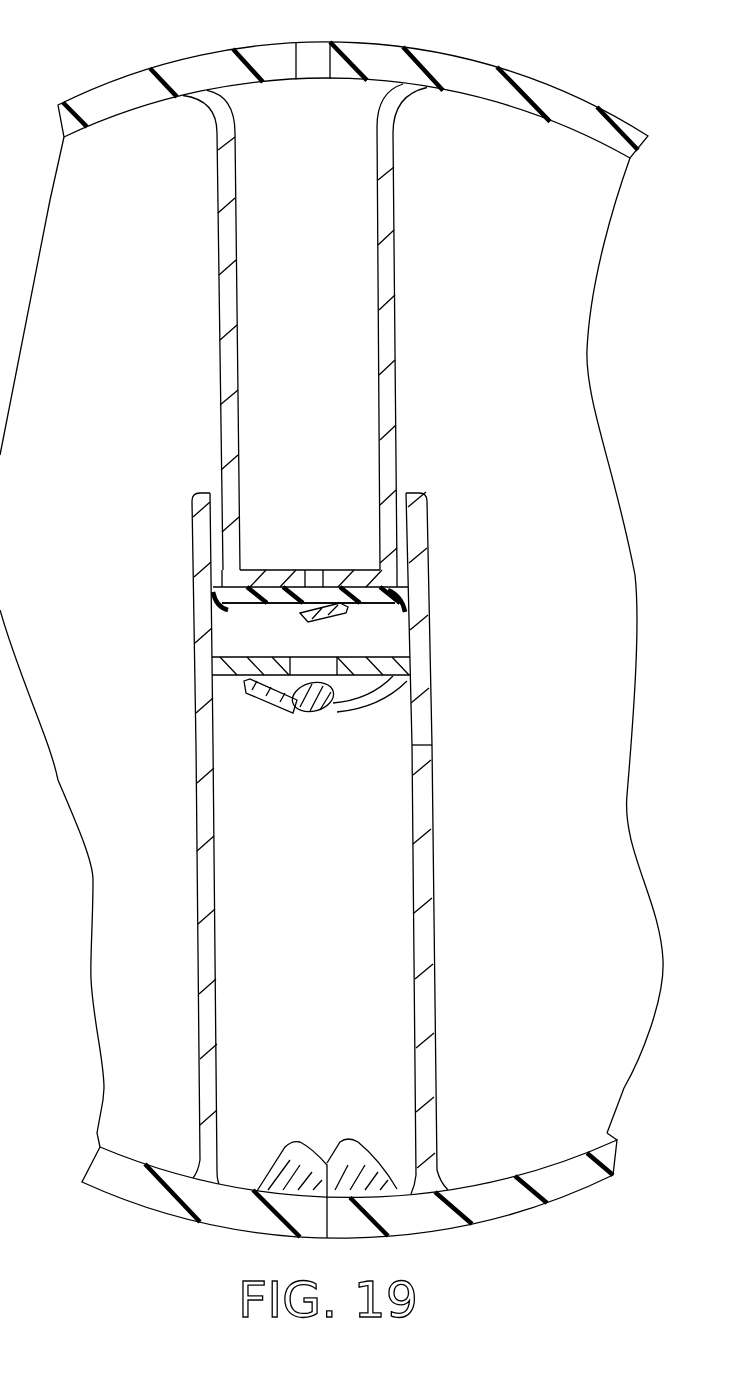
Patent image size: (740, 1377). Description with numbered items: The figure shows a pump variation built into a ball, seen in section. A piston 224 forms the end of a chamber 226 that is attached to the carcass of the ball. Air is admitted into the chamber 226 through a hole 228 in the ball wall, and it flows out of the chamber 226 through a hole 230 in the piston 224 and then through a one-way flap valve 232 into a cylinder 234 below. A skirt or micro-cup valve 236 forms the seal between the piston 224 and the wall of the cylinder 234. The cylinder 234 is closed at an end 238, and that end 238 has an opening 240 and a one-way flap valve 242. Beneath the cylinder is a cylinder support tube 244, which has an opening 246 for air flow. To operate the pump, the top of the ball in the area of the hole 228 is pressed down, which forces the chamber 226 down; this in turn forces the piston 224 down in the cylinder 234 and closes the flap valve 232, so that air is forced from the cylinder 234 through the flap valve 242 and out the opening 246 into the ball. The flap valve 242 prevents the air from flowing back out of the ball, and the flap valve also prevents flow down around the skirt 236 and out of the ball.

The piston 224 is at (350, 578).
The chamber 226 is at (395, 393).
The hole 228 is at (315, 50).
The hole in the piston 230 is at (315, 578).
The one-way flap valve 232 is at (318, 618).
The cylinder 234 is at (230, 642).
The skirt or micro-cup valve 236 is at (213, 595).
The end 238 is at (226, 676).
The opening 240 is at (300, 668).
The one-way flap valve 242 is at (318, 712).
The cylinder support tube 244 is at (425, 864).
The opening 246 is at (425, 760).